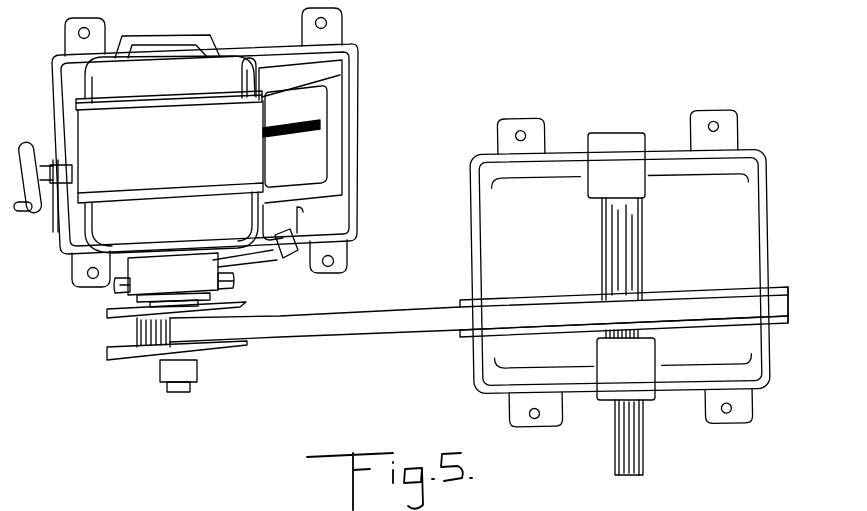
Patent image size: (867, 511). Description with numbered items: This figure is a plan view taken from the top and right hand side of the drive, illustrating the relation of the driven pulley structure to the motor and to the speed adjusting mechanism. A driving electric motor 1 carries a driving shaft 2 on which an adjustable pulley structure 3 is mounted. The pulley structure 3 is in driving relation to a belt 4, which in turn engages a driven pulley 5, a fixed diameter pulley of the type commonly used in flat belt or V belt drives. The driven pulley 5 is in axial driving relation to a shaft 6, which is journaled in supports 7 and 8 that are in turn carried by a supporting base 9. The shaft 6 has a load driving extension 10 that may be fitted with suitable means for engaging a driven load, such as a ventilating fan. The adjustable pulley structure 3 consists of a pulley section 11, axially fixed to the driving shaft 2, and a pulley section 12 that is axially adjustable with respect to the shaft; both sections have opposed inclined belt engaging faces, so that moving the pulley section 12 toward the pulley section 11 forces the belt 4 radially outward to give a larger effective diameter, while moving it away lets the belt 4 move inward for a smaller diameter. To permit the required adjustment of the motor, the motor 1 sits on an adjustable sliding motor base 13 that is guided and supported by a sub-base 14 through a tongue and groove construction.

The driving electric motor 1 is at (168, 158).
The driving shaft 2 is at (173, 393).
The adjustable pulley structure 3 is at (103, 339).
The belt 4 is at (308, 338).
The driven pulley 5 is at (571, 294).
The shaft 6 is at (643, 261).
The support 7 is at (632, 133).
The support 8 is at (653, 400).
The supporting base 9 is at (514, 225).
The load driving extension 10 is at (645, 462).
The pulley section 11 is at (220, 358).
The pulley section 12 is at (238, 303).
The adjustable sliding motor base 13 is at (246, 58).
The sub-base 14 is at (360, 80).